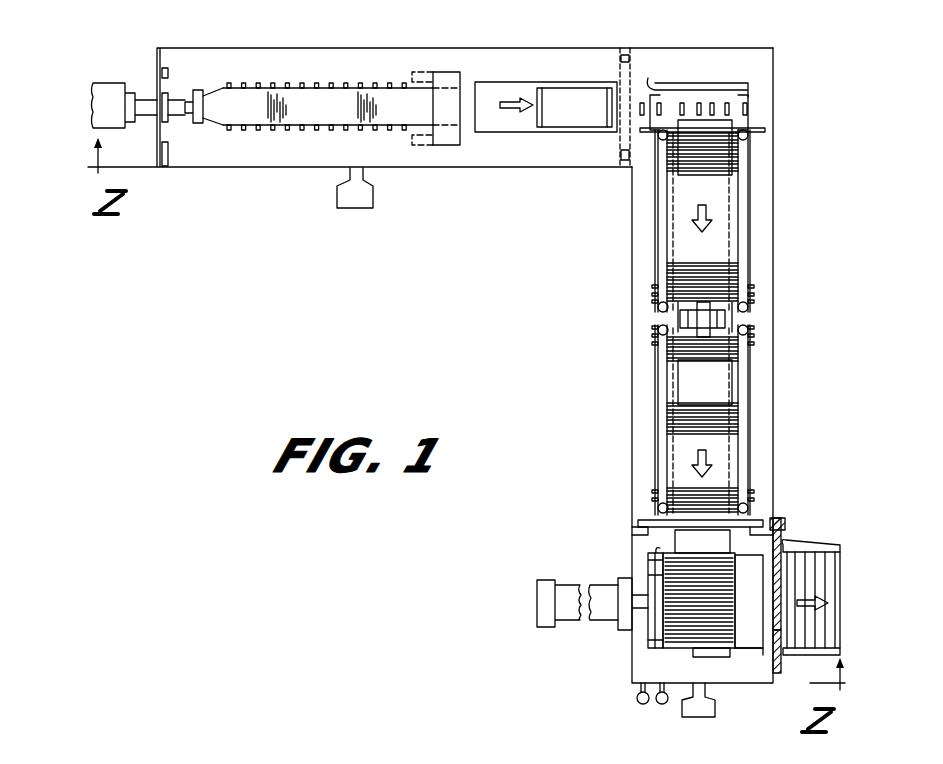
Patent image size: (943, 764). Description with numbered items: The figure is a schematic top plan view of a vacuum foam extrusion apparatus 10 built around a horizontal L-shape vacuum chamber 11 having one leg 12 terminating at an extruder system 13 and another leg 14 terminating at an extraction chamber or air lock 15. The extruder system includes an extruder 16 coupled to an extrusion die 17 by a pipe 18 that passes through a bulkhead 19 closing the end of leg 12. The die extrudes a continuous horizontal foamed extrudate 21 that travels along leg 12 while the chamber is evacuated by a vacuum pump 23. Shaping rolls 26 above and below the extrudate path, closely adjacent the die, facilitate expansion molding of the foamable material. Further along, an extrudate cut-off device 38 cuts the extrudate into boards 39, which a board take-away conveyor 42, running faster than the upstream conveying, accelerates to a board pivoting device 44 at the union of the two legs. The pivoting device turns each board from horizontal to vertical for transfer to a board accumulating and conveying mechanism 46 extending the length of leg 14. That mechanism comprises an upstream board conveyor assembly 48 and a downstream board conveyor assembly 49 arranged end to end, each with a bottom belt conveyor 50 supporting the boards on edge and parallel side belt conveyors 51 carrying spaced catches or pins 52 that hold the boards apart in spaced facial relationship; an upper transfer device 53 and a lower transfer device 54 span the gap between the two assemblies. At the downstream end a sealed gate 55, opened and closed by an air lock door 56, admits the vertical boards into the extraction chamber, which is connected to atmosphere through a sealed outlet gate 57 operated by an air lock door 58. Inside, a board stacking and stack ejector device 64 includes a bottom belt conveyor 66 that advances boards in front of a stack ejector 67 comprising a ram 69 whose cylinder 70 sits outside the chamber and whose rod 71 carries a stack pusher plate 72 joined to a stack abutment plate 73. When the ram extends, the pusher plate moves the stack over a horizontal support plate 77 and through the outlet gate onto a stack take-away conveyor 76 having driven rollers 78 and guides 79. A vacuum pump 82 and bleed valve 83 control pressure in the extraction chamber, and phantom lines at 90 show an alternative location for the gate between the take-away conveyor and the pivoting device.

The vacuum foam extrusion apparatus 10 is at (305, 207).
The L-shape vacuum chamber 11 is at (300, 46).
The vacuum chamber leg 12 is at (518, 168).
The extruder system 13 is at (107, 80).
The vacuum chamber leg 14 is at (633, 231).
The extraction chamber 15 is at (745, 684).
The extruder 16 is at (108, 126).
The extrusion die 17 is at (177, 100).
The pipe 18 is at (143, 97).
The bulkhead 19 is at (157, 148).
The foamed extrudate 21 is at (274, 83).
The vacuum pump 23 is at (375, 186).
The shaping rolls 26 is at (205, 122).
The extrudate cut-off device 38 is at (442, 72).
The boards 39 is at (572, 88).
The board take-away conveyor 42 is at (515, 133).
The board pivoting device 44 is at (714, 78).
The board accumulating and conveying mechanism 46 is at (643, 369).
The upstream board conveyor assembly 48 is at (754, 222).
The downstream board conveyor assembly 49 is at (756, 440).
The bottom belt conveyor 50 is at (683, 182).
The side belt conveyors 51 is at (655, 211).
The catches or pins 52 is at (752, 288).
The upper transfer device 53 is at (748, 318).
The lower transfer device 54 is at (697, 338).
The sealed gate 55 is at (647, 512).
The air lock door 56 is at (752, 520).
The sealed outlet gate 57 is at (783, 540).
The air lock door 58 is at (782, 642).
The board stacking and stack ejector device 64 is at (638, 696).
The bottom belt conveyor 66 is at (705, 656).
The stack ejector 67 is at (636, 633).
The ram 69 is at (535, 597).
The cylinder 70 is at (575, 584).
The rod 71 is at (640, 590).
The stack pusher plate 72 is at (652, 560).
The stack abutment plate 73 is at (670, 653).
The stack take-away conveyor 76 is at (812, 544).
The horizontal support plate 77 is at (758, 650).
The driven rollers 78 is at (800, 570).
The guides 79 is at (835, 545).
The vacuum pump 82 is at (695, 719).
The bleed valve 83 is at (661, 706).
The gate 90 is at (628, 60).